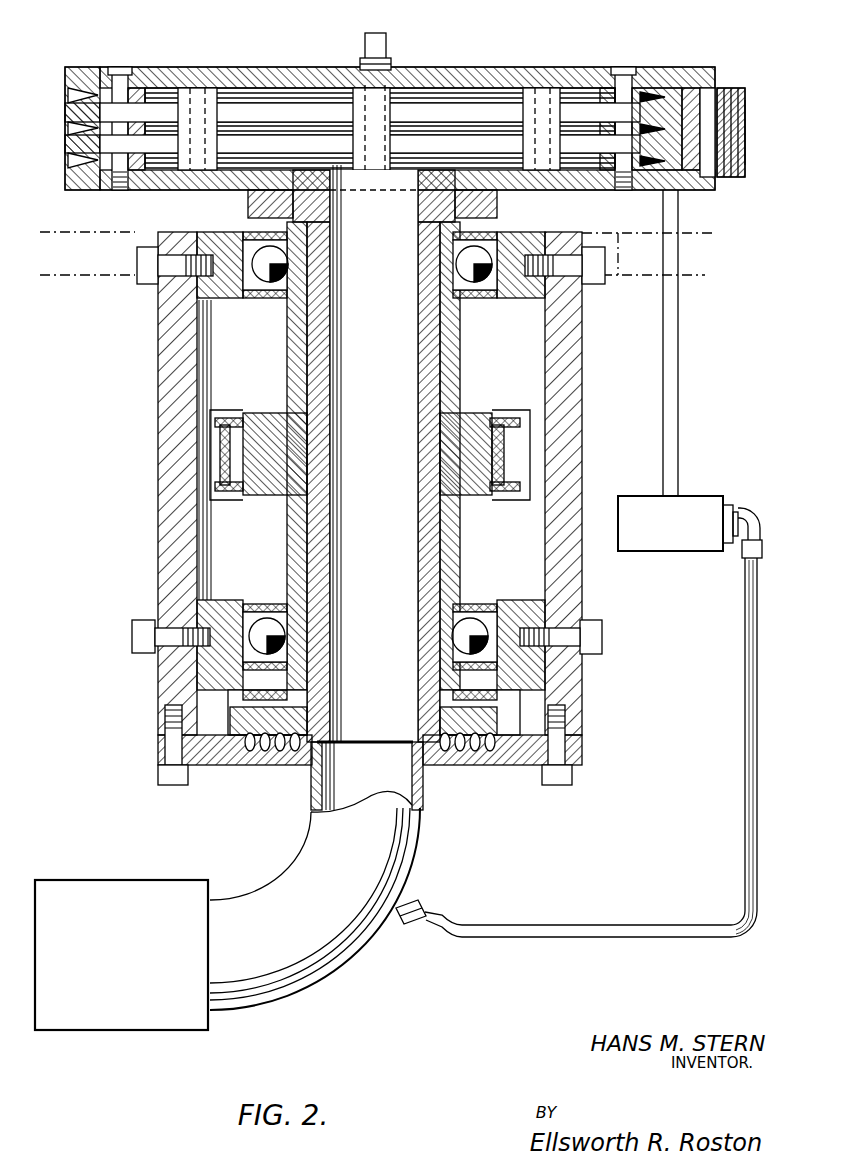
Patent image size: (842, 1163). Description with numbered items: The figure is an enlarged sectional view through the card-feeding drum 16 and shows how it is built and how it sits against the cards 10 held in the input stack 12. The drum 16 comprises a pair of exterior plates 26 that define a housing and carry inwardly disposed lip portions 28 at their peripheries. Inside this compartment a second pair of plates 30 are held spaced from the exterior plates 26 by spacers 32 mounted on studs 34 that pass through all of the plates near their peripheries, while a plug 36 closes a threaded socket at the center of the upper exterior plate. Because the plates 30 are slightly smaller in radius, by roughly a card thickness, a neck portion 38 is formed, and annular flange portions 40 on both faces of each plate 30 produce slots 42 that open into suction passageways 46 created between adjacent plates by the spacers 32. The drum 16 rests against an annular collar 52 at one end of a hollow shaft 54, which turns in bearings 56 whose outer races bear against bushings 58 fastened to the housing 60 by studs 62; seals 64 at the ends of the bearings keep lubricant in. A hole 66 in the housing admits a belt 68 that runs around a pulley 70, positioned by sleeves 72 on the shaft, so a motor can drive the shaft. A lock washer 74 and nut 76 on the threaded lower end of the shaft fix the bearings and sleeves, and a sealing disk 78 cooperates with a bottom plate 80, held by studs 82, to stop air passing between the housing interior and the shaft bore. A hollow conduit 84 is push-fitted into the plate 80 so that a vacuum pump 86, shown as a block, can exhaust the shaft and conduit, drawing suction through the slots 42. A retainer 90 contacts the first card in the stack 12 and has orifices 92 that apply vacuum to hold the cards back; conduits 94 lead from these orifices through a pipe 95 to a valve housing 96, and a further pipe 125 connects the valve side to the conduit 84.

The cards 10 is at (82, 93).
The input stack 12 is at (748, 155).
The drum 16 is at (525, 72).
The exterior plates 26 is at (660, 84).
The lip portions 28 is at (72, 88).
The plates 30 is at (473, 147).
The spacers 32 is at (183, 92).
The studs 34 is at (122, 70).
The plug 36 is at (378, 55).
The neck portion 38 is at (85, 112).
The annular flange portions 40 is at (86, 128).
The slots 42 is at (243, 92).
The suction passageways 46 is at (288, 88).
The annular collar 52 is at (250, 208).
The hollow shaft 54 is at (428, 381).
The bearings 56 is at (465, 273).
The bushings 58 is at (200, 287).
The housing 60 is at (578, 385).
The studs 62 is at (593, 278).
The seals 64 is at (272, 302).
The hole 66 is at (233, 498).
The belt 68 is at (522, 455).
The pulley 70 is at (474, 422).
The sleeves 72 is at (458, 343).
The lock washer 74 is at (280, 678).
The nut 76 is at (478, 692).
The sealing disk 78 is at (498, 718).
The bottom plate 80 is at (510, 752).
The studs 82 is at (173, 786).
The hollow conduit 84 is at (388, 850).
The vacuum pump 86 is at (113, 1008).
The retainer 90 is at (707, 67).
The orifices 92 is at (705, 90).
The conduits 94 is at (740, 100).
The pipe 95 is at (673, 358).
The valve housing 96 is at (690, 556).
The pipe 125 is at (577, 925).